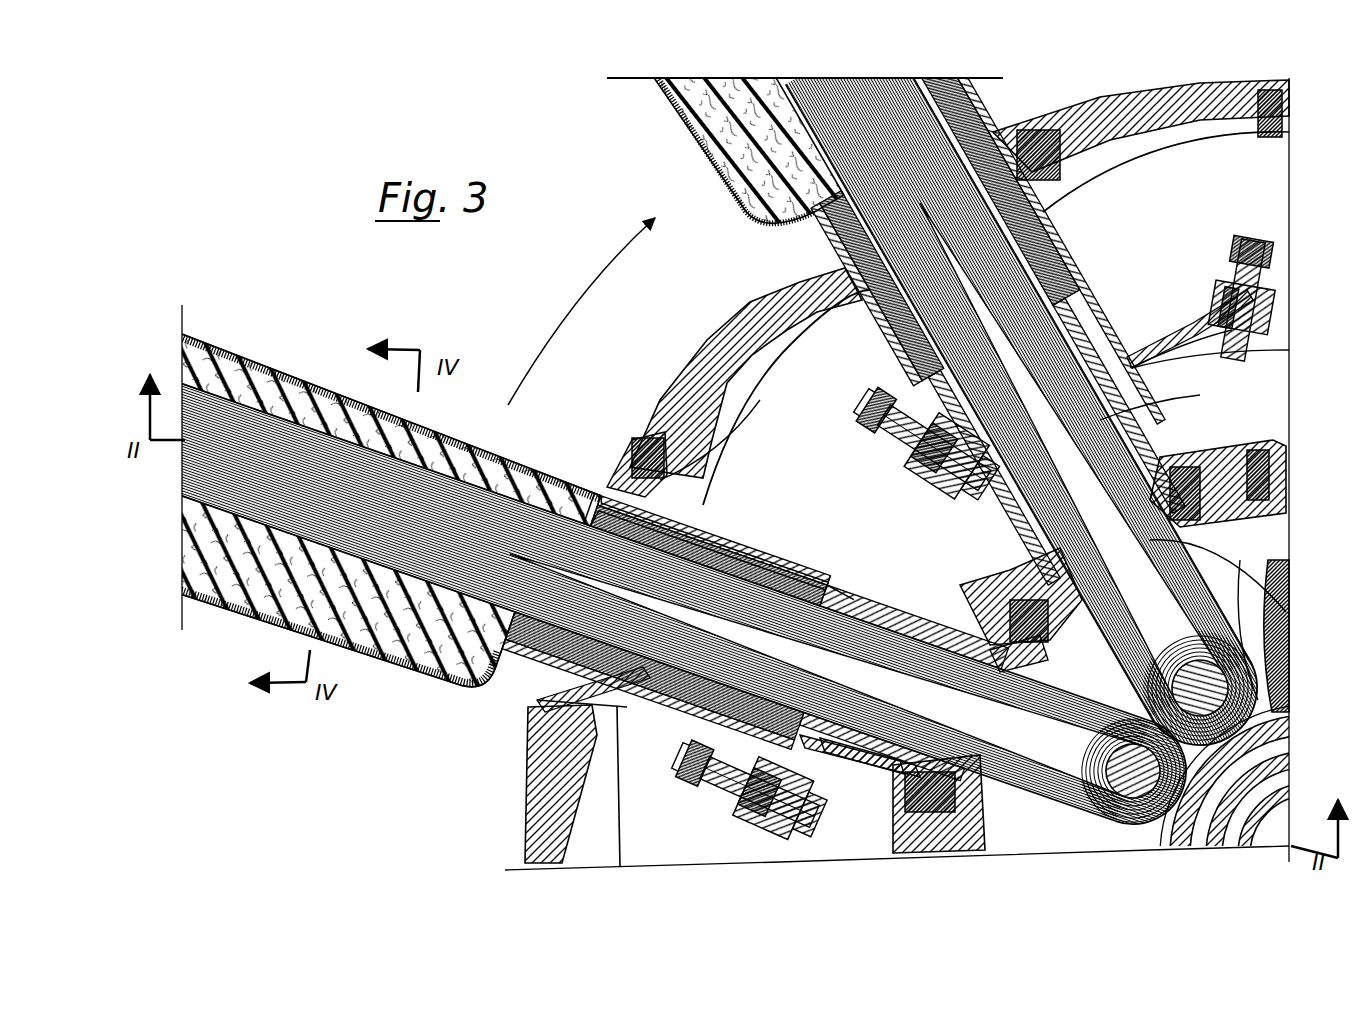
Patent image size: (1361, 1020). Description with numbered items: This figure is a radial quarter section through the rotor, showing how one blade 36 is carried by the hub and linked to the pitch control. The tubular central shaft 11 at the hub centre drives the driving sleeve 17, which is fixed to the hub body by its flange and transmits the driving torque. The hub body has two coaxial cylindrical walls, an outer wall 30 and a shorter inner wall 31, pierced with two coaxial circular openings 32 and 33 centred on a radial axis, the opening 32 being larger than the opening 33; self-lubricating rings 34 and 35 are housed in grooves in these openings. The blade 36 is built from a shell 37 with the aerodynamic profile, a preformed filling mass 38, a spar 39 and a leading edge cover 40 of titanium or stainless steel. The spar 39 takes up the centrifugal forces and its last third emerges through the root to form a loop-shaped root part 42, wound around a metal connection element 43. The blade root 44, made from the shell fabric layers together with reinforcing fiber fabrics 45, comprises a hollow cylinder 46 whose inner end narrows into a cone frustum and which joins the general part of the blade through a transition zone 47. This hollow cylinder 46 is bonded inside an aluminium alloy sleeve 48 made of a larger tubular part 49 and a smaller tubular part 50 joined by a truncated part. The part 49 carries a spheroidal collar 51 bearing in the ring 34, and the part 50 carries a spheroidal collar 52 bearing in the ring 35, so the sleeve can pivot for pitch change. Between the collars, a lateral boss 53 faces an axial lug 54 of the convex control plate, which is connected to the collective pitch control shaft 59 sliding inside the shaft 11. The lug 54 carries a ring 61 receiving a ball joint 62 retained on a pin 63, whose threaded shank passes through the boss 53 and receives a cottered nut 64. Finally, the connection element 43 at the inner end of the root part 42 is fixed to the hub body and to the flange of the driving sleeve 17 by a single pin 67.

The tubular central shaft 11 is at (1289, 768).
The driving sleeve 17 is at (1290, 742).
The outer cylindrical wall 30 is at (700, 350).
The inner cylindrical wall 31 is at (1000, 575).
The circular opening in outer wall 32 is at (700, 487).
The circular opening in inner wall 33 is at (1020, 652).
The self-lubricating ring 34 is at (662, 446).
The self-lubricating ring 35 is at (990, 592).
The blade 36 is at (401, 384).
The shell 37 is at (297, 614).
The preformed filling mass 38 is at (288, 634).
The spar 39 is at (232, 423).
The leading edge cover 40 is at (397, 395).
The root part 42 is at (880, 740).
The connection element 43 is at (1111, 763).
The blade root 44 is at (695, 507).
The reinforcing fiber fabrics 45 is at (798, 765).
The hollow cylinder 46 is at (886, 585).
The transition zone 47 is at (633, 728).
The metal sleeve 48 is at (845, 555).
The tubular part of larger diameter 49 is at (721, 518).
The tubular part of smaller diameter 50 is at (845, 777).
The collar 51 is at (532, 765).
The collar 52 is at (980, 805).
The lateral boss 53 is at (740, 819).
The axial lug 54 is at (717, 808).
The pitch control shaft 59 is at (1289, 800).
The ring 61 is at (796, 812).
The ball joint 62 is at (906, 489).
The pin 63 is at (899, 476).
The nut 64 is at (850, 401).
The pin 67 is at (1155, 811).